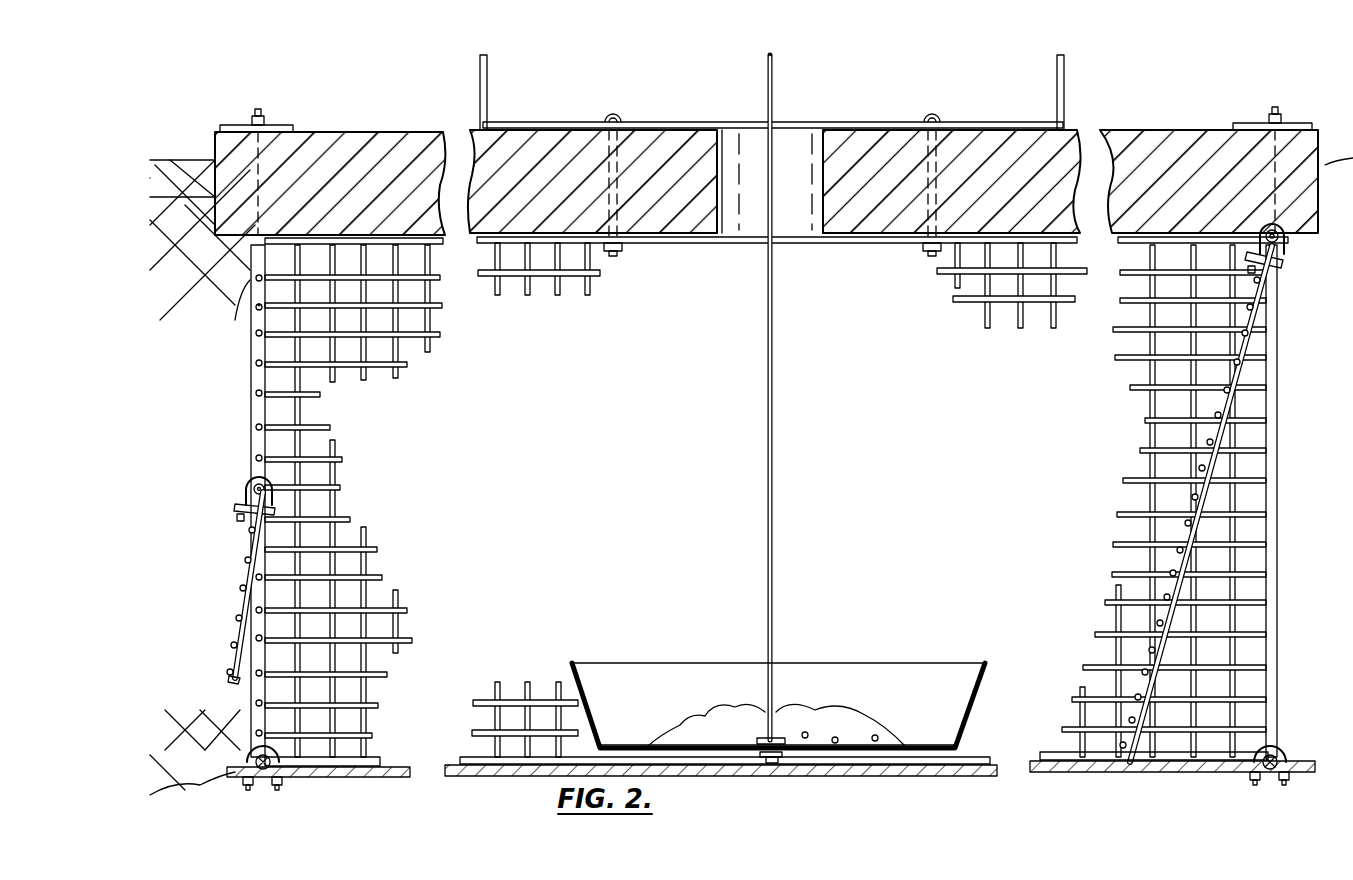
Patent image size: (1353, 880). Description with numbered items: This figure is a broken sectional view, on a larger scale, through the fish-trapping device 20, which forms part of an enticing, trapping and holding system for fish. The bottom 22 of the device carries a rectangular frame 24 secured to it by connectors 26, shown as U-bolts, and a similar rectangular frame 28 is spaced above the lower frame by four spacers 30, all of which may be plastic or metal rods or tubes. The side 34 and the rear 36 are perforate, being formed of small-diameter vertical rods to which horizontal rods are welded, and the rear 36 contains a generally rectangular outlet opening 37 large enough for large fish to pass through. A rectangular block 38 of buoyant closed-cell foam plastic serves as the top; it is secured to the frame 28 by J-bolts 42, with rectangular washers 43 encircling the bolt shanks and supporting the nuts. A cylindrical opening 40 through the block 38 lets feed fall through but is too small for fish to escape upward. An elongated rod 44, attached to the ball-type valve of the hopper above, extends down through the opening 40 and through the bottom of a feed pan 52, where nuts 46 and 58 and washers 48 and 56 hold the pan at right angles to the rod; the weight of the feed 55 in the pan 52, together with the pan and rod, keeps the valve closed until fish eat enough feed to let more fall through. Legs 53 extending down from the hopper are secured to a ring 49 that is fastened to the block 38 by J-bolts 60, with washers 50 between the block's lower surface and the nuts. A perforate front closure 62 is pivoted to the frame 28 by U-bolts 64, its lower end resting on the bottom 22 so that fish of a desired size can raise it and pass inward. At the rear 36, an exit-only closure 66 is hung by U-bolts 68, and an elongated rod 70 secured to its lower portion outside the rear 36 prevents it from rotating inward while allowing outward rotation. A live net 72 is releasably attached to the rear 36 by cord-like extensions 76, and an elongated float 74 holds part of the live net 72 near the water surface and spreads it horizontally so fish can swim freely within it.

The fish-trapping device 20 is at (1140, 104).
The bottom 22 is at (405, 778).
The rectangular frame 24 is at (348, 765).
The connectors 26 is at (249, 790).
The rectangular frame 28 is at (262, 248).
The spacers 30 is at (257, 444).
The side 34 is at (442, 306).
The rear 36 is at (252, 372).
The outlet opening 37 is at (258, 598).
The block of buoyant material 38 is at (428, 140).
The cylindrical opening 40 is at (728, 236).
The J-bolts 42 is at (258, 110).
The rectangular washers 43 is at (288, 126).
The elongated rod 44 is at (774, 462).
The nut 46 is at (780, 736).
The washer 48 is at (745, 715).
The ring 49 is at (680, 123).
The washers 50 is at (622, 248).
The feed pan 52 is at (930, 665).
The legs 53 is at (488, 72).
The feed 55 is at (850, 720).
The washer 56 is at (785, 766).
The nut 58 is at (756, 770).
The J-bolts 60 is at (617, 114).
The closure 62 is at (1169, 557).
The U-bolts 64 is at (1285, 262).
The exit only closure 66 is at (242, 570).
The U-bolts 68 is at (246, 490).
The elongated rod 70 is at (232, 660).
The live net 72 is at (200, 790).
The elongated float 74 is at (197, 170).
The cord-like extensions 76 is at (269, 348).